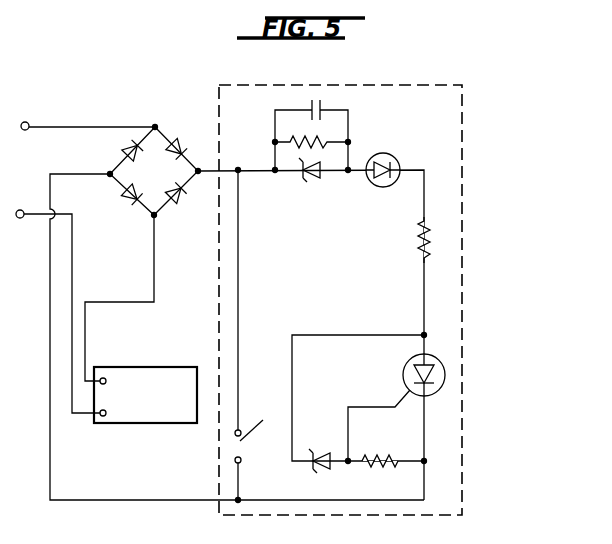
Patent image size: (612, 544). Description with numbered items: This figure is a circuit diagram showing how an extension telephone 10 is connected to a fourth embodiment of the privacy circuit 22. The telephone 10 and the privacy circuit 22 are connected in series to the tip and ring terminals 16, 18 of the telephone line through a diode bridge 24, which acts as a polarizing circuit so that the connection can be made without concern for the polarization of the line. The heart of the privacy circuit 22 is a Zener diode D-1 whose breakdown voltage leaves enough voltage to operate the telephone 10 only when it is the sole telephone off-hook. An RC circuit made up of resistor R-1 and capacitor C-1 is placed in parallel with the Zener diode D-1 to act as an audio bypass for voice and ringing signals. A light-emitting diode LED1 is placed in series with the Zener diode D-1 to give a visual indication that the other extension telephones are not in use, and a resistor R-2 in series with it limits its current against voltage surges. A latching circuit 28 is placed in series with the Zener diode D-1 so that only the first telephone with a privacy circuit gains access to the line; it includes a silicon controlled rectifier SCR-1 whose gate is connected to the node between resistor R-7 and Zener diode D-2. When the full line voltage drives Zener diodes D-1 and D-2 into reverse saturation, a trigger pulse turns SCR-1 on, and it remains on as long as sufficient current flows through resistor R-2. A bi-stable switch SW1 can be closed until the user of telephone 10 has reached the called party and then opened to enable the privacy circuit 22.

The tip terminal 16 is at (30, 115).
The ring terminal 18 is at (24, 222).
The diode bridge 24 is at (142, 217).
The extension telephone 10 is at (123, 423).
The privacy circuit 22 is at (463, 150).
The capacitor C-1 is at (323, 105).
The resistor R-1 is at (325, 135).
The Zener diode D-1 is at (313, 177).
The light-emitting diode LED1 is at (380, 187).
The resistor R-2 is at (417, 230).
The latching circuit 28 is at (353, 325).
The silicon controlled rectifier SCR-1 is at (403, 375).
The Zener diode D-2 is at (312, 453).
The resistor R-7 is at (378, 452).
The bi-stable switch SW1 is at (257, 334).